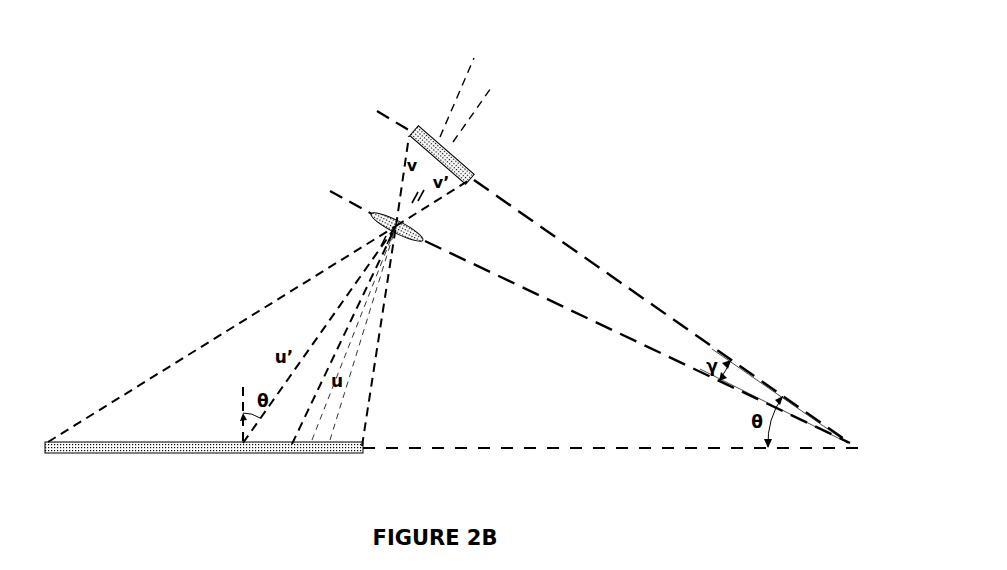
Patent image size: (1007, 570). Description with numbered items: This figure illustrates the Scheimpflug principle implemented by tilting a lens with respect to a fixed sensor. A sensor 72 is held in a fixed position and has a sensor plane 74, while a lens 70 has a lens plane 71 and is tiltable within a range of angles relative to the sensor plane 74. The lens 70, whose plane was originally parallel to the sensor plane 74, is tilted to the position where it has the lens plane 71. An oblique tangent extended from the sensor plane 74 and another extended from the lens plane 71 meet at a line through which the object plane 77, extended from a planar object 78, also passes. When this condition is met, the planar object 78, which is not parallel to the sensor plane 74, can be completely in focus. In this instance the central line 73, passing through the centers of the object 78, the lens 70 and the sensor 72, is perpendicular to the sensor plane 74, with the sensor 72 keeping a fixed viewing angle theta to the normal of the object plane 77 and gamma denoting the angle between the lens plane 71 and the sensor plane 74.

The lens 70 is at (388, 213).
The lens plane 71 is at (448, 250).
The sensor 72 is at (458, 161).
The central line 73 is at (475, 81).
The sensor plane 74 is at (633, 290).
The object plane 77 is at (512, 446).
The planar object 78 is at (80, 446).